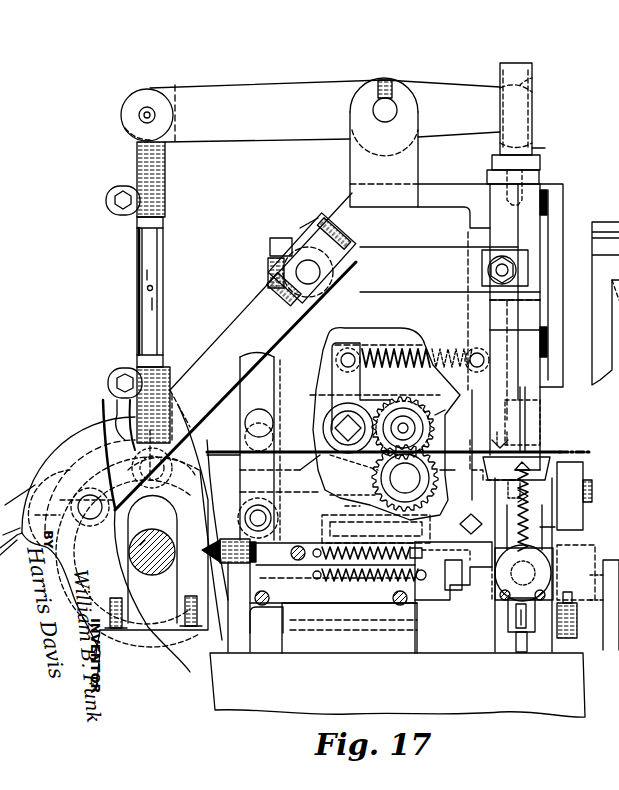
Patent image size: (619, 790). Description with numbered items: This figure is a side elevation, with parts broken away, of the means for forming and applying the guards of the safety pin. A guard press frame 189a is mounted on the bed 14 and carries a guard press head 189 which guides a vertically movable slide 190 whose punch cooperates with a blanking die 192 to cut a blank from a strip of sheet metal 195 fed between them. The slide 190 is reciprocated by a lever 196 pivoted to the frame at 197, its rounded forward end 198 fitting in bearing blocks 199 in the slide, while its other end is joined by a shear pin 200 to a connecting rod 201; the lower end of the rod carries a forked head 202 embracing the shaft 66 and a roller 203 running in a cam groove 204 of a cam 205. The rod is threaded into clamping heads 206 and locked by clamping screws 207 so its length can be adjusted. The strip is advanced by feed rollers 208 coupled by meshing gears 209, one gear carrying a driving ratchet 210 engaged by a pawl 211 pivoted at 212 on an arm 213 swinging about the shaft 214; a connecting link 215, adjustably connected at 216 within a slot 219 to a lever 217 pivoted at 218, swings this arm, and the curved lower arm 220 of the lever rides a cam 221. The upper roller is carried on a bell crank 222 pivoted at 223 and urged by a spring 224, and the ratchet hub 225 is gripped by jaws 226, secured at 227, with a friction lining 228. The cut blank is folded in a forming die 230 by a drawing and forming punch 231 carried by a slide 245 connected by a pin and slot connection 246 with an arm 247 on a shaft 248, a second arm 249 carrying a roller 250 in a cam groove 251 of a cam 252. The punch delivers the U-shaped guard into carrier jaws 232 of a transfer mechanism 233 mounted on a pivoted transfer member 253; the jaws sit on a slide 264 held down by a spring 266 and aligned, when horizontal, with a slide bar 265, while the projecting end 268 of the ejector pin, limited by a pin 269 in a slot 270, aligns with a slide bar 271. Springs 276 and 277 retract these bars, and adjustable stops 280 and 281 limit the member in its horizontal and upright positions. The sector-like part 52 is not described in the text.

The bed 14 is at (505, 705).
The sector gear segment 52 is at (45, 468).
The shaft 66 is at (152, 560).
The guard press head 189 is at (563, 222).
The guard press frame 189a is at (312, 222).
The slide 190 is at (532, 148).
The blanking die 192 is at (540, 455).
The strip of sheet metal 195 is at (585, 450).
The lever 196 is at (437, 80).
The pivot 197 is at (385, 110).
The rounded forward end 198 is at (530, 80).
The bearing blocks 199 is at (532, 65).
The shear pin 200 is at (140, 115).
The connecting rod 201 is at (137, 270).
The forked head 202 is at (223, 480).
The roller 203 is at (161, 474).
The cam groove 204 is at (108, 440).
The cam 205 is at (118, 398).
The clamping heads 206 is at (167, 200).
The clamping screws 207 is at (110, 206).
The feed rollers 208 is at (405, 478).
The meshing gears 209 is at (412, 408).
The driving ratchet 210 is at (360, 468).
The pawl 211 is at (378, 372).
The pawl pivot 212 is at (437, 417).
The arm 213 is at (470, 370).
The shaft 214 is at (415, 478).
The connecting link 215 is at (300, 402).
The adjustable connection 216 is at (246, 430).
The lever 217 is at (240, 468).
The lever pivot 218 is at (260, 510).
The slot 219 is at (262, 362).
The curved lower arm 220 is at (230, 620).
The cam 221 is at (258, 634).
The bell crank 222 is at (348, 400).
The bell crank pivot 223 is at (318, 458).
The spring 224 is at (385, 348).
The hub 225 is at (468, 518).
The jaws 226 is at (390, 505).
The friction device securing point 227 is at (376, 529).
The lining 228 is at (453, 570).
The forming die 230 is at (499, 436).
The drawing and forming punch 231 is at (524, 445).
The carrier jaws 232 is at (565, 478).
The transfer mechanism 233 is at (560, 548).
The slide 245 is at (510, 305).
The pin and slot connection 246 is at (488, 272).
The arm 247 is at (385, 250).
The shaft 248 is at (290, 268).
The arm 249 is at (218, 325).
The roller 250 is at (75, 500).
The cam groove 251 is at (40, 515).
The cam 252 is at (114, 552).
The transfer member 253 is at (563, 530).
The slide 264 is at (508, 612).
The slide bar 265 is at (450, 590).
The spring 266 is at (520, 528).
The projecting end of ejector pin 268 is at (522, 652).
The pin 269 is at (518, 618).
The slot 270 is at (510, 606).
The slide bar 271 is at (363, 597).
The spring 276 is at (356, 542).
The spring 277 is at (348, 580).
The adjustable stop 280 is at (568, 592).
The adjustable stop 281 is at (520, 520).